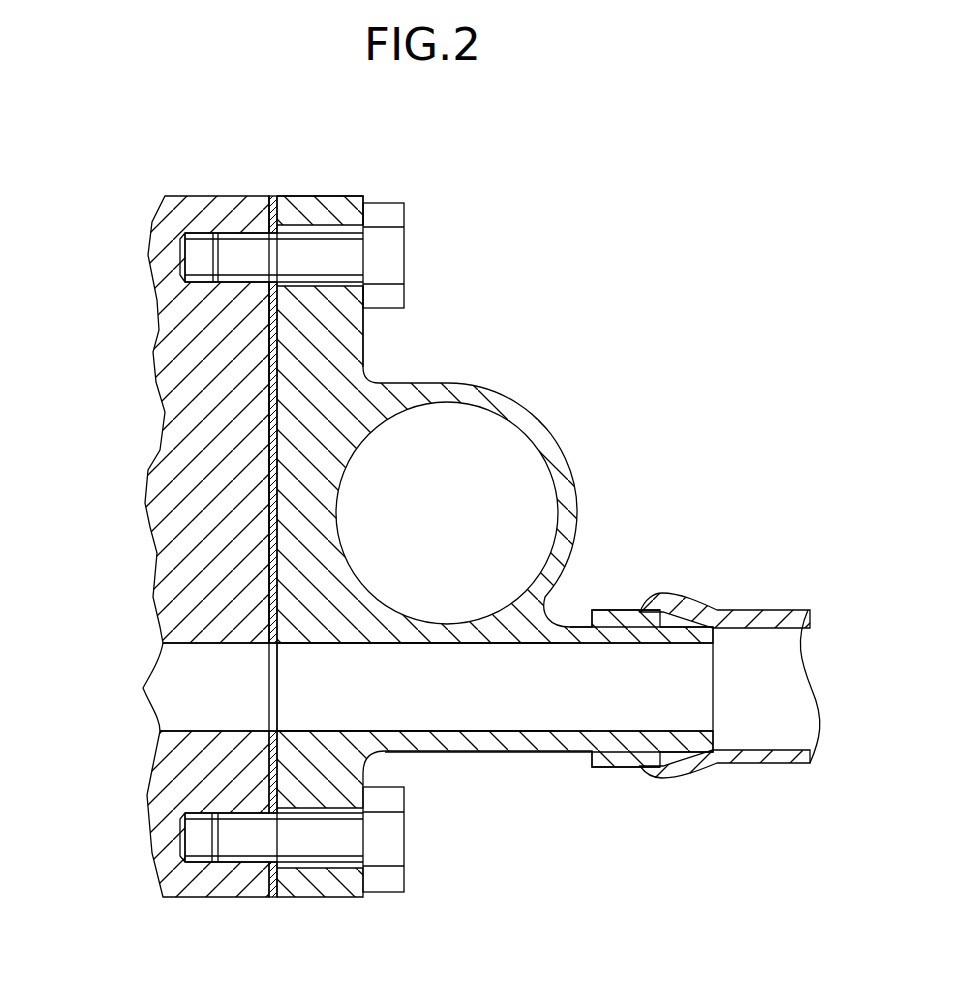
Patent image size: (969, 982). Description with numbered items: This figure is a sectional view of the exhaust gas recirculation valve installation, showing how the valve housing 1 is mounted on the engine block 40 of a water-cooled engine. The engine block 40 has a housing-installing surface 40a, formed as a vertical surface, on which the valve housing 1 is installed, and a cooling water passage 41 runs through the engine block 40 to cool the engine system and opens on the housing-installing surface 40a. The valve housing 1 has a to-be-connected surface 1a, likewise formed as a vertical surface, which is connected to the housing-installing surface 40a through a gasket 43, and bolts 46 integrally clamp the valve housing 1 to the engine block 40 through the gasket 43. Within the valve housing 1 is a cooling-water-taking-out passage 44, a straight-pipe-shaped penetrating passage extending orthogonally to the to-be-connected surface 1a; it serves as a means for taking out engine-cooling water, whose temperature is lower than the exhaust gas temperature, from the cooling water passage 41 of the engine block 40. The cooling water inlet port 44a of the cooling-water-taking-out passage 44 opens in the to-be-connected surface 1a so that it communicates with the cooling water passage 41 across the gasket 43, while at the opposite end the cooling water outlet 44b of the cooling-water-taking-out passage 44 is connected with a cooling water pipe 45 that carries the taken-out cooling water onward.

The valve housing 1 is at (535, 411).
The to-be-connected surface 1a is at (277, 332).
The engine block 40 is at (158, 453).
The housing-installing surface 40a is at (268, 350).
The cooling water passage 41 is at (173, 678).
The gasket 43 is at (274, 196).
The cooling-water-taking-out passage 44 is at (520, 702).
The cooling water inlet port 44a is at (297, 708).
The cooling water outlet 44b is at (697, 713).
The cooling water pipe 45 is at (758, 610).
The bolts 46 is at (404, 222).